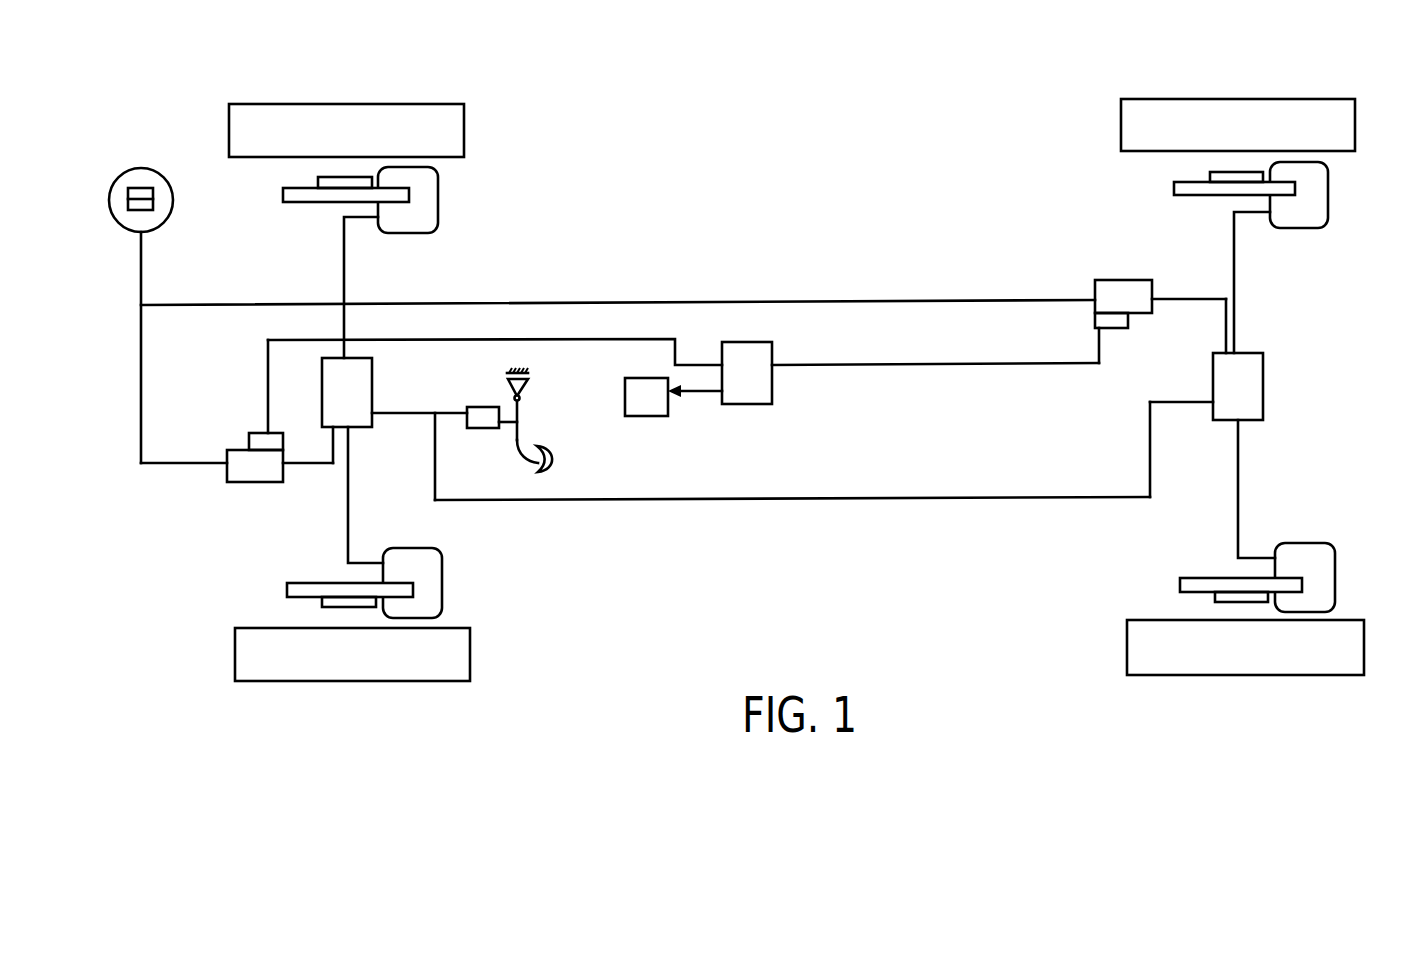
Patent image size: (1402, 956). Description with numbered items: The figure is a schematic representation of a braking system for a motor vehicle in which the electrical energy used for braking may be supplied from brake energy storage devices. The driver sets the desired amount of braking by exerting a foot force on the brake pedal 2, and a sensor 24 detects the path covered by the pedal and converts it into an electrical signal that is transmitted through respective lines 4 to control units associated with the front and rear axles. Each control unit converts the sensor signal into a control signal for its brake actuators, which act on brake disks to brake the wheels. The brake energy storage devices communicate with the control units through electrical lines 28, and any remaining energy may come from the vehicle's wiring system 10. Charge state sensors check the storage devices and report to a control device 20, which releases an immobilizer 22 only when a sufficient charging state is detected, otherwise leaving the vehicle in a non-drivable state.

The brake pedal 2 is at (536, 474).
The lines 4 is at (410, 413).
The vehicle's wiring system 10 is at (118, 177).
The control device 20 is at (757, 342).
The immobilizer 22 is at (668, 410).
The sensor 24 is at (480, 407).
The electrical lines 28 is at (320, 463).